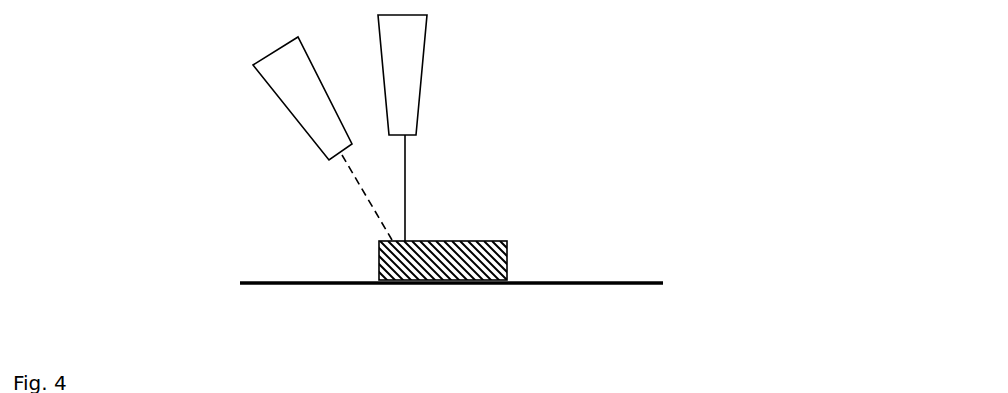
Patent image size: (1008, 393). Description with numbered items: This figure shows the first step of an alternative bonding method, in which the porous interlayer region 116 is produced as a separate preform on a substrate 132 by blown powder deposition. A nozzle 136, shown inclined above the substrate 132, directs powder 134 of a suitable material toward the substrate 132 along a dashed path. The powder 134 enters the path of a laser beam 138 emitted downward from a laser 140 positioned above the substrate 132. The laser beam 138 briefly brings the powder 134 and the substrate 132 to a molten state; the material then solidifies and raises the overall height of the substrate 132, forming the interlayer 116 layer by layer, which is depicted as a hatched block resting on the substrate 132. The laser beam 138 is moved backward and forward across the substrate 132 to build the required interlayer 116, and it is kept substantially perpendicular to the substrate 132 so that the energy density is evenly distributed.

The porous interlayer region 116 is at (510, 255).
The substrate 132 is at (300, 281).
The powder 134 is at (370, 195).
The nozzle 136 is at (282, 95).
The laser beam 138 is at (405, 182).
The laser 140 is at (423, 80).